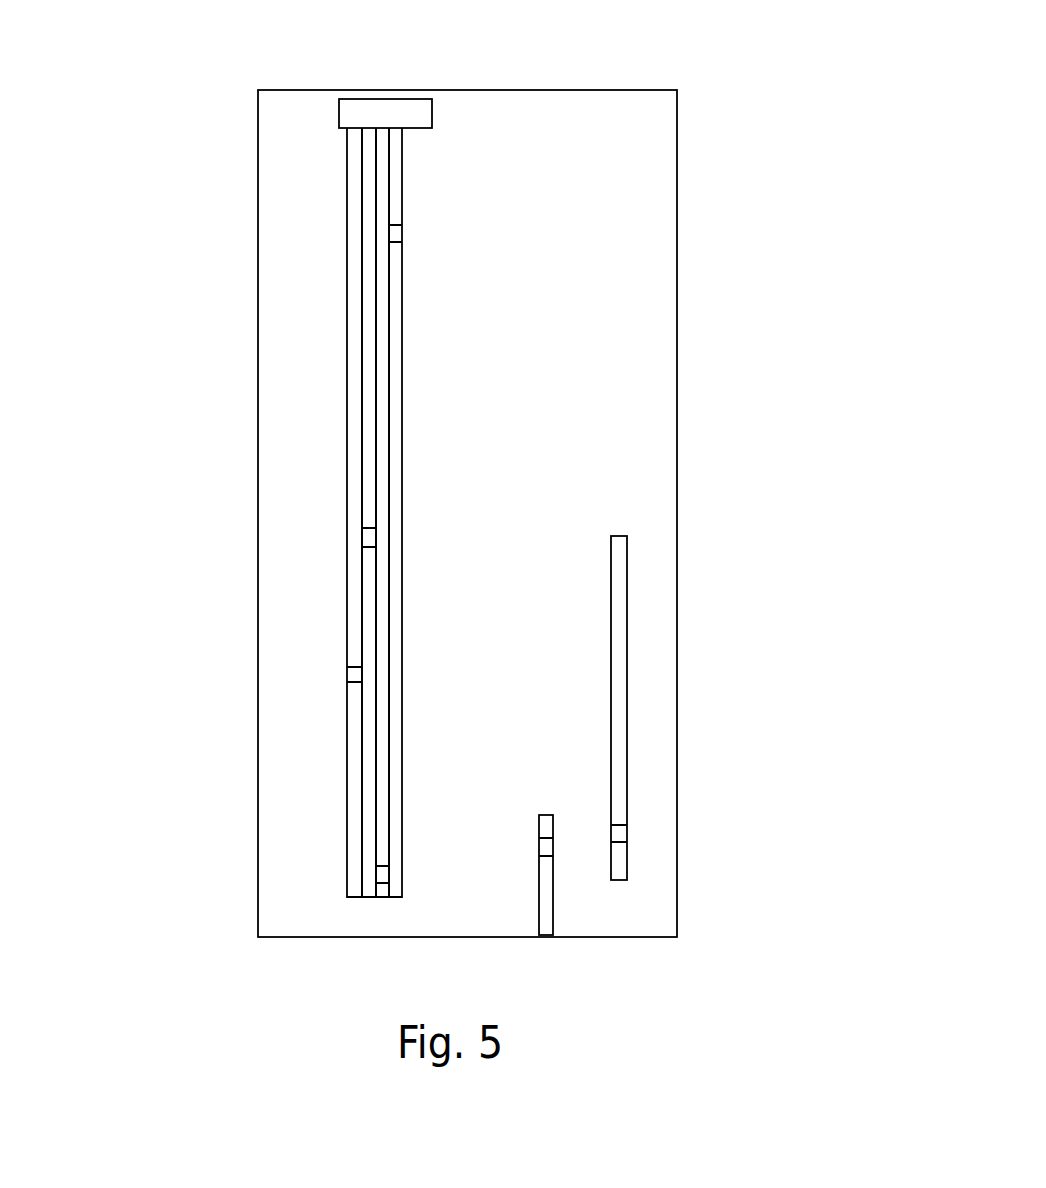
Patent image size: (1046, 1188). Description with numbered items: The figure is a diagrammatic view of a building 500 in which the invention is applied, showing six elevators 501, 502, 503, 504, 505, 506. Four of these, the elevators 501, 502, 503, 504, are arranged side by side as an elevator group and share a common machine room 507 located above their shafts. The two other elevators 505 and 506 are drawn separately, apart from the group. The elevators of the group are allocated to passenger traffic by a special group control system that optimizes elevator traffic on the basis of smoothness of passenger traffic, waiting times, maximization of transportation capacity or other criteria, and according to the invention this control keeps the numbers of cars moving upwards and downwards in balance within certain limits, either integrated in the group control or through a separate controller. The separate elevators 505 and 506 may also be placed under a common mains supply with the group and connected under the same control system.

The building 500 is at (677, 187).
The elevator 501 is at (347, 391).
The elevator 502 is at (363, 425).
The elevator 503 is at (382, 460).
The elevator 504 is at (390, 493).
The elevator 505 is at (627, 705).
The elevator 506 is at (553, 893).
The common machine room 507 is at (339, 113).